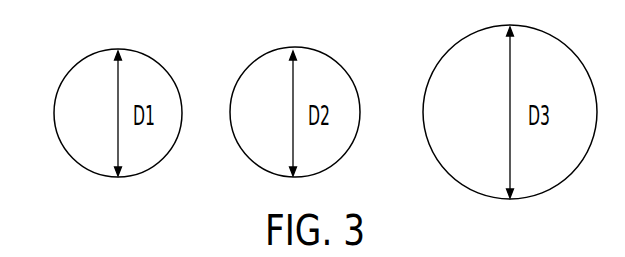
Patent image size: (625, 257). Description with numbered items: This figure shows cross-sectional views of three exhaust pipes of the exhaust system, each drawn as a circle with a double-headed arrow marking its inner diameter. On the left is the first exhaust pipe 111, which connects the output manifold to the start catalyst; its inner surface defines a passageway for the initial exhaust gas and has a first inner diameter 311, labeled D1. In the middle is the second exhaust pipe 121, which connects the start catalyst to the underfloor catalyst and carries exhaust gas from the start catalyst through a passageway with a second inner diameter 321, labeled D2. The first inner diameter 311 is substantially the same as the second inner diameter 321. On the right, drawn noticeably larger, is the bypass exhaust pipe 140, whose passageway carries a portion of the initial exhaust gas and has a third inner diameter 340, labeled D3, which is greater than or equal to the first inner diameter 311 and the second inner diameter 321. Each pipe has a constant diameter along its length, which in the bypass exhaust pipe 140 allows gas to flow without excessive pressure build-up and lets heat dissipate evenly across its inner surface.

The first exhaust pipe 111 is at (92, 57).
The second exhaust pipe 121 is at (265, 55).
The bypass exhaust pipe 140 is at (453, 48).
The first inner diameter 311 is at (115, 125).
The second inner diameter 321 is at (290, 122).
The third inner diameter 340 is at (507, 110).